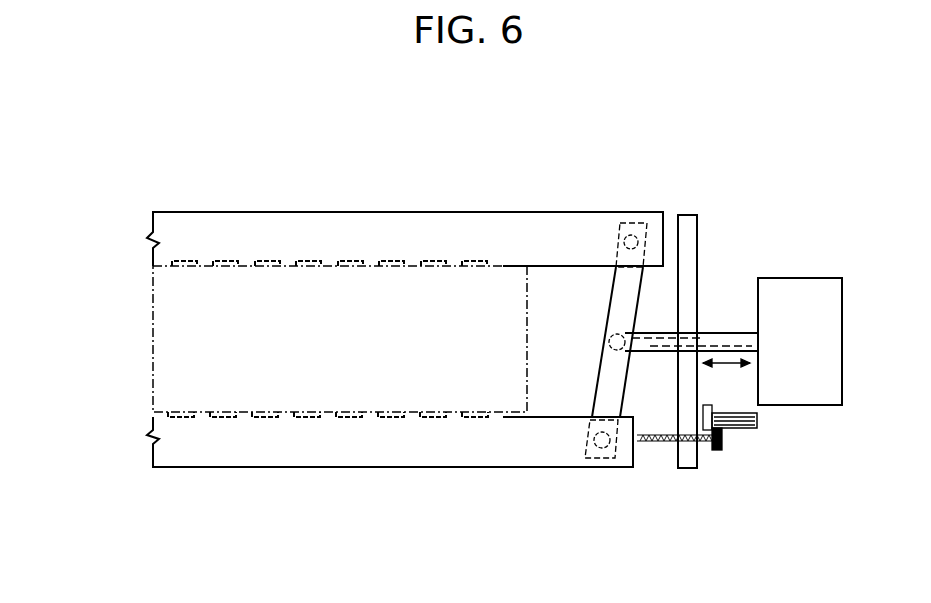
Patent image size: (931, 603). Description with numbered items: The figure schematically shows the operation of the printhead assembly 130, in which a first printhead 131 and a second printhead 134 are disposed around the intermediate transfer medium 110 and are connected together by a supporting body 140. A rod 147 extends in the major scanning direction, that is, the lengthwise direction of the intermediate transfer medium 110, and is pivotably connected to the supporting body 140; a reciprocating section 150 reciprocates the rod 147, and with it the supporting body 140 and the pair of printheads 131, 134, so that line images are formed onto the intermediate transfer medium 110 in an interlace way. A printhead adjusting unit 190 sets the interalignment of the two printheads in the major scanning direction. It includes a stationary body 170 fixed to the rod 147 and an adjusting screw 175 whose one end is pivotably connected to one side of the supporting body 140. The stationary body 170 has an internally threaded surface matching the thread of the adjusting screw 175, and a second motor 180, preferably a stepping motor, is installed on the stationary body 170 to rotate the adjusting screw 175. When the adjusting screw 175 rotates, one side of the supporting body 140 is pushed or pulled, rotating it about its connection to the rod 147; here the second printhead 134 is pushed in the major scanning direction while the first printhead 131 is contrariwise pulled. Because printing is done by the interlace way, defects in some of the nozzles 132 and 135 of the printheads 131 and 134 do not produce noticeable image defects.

The printhead assembly 130 is at (130, 186).
The intermediate transfer medium 110 is at (263, 282).
The first printhead 131 is at (422, 240).
The nozzles 132 is at (370, 263).
The second printhead 134 is at (435, 468).
The nozzles 135 is at (407, 417).
The supporting body 140 is at (622, 258).
The rod 147 is at (743, 337).
The reciprocating section 150 is at (802, 300).
The stationary body 170 is at (688, 228).
The adjusting screw 175 is at (722, 443).
The second motor 180 is at (705, 405).
The printhead adjusting unit 190 is at (728, 493).